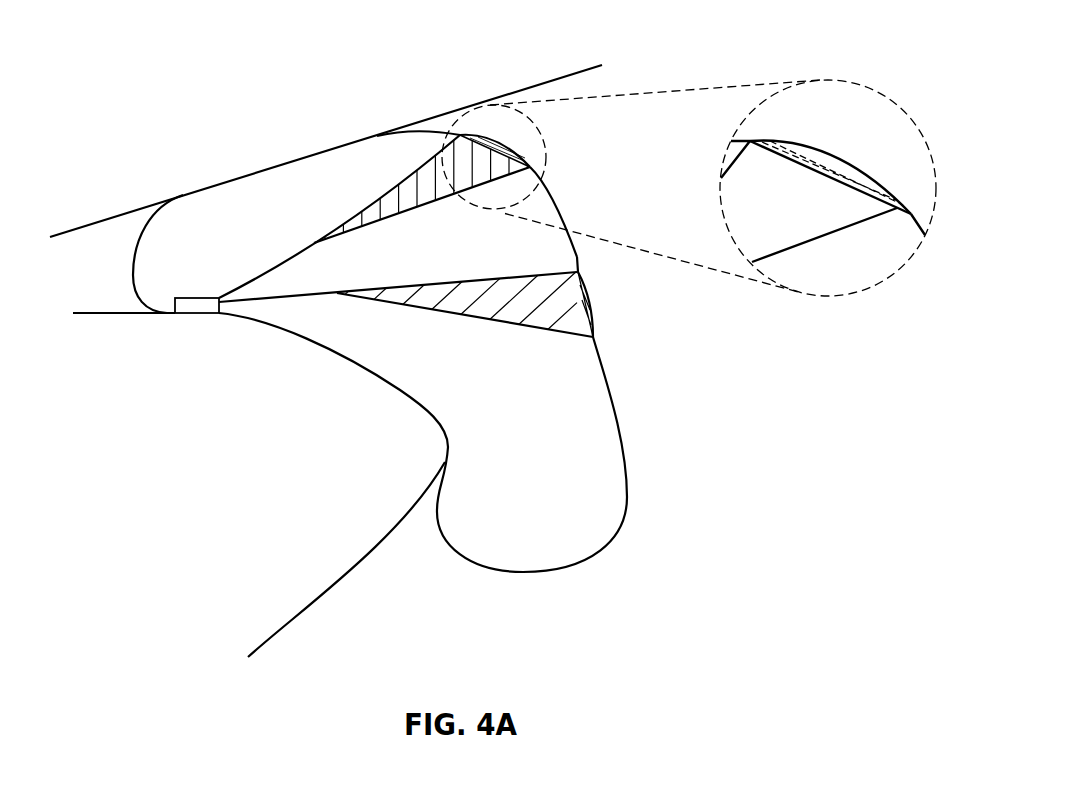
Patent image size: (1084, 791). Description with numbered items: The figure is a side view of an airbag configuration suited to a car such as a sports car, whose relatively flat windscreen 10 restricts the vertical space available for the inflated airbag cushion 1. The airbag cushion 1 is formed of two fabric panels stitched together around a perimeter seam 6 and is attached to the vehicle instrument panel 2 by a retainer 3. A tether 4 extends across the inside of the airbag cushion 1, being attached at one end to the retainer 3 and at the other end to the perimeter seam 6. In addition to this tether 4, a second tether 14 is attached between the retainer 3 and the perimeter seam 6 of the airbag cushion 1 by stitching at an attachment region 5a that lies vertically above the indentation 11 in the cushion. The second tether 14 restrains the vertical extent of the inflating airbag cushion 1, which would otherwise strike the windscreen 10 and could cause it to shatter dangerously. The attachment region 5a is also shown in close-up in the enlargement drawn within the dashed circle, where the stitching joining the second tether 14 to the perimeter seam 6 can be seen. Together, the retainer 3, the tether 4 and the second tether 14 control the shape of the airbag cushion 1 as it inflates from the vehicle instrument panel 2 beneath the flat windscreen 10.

The windscreen 10 is at (562, 78).
The airbag cushion 1 is at (267, 192).
The retainer 3 is at (198, 307).
The second tether 14 is at (378, 193).
The attachment region 5a is at (847, 157).
The indentation 11 is at (588, 256).
The tether 4 is at (500, 323).
The perimeter seam 6 is at (620, 427).
The vehicle instrument panel 2 is at (271, 497).